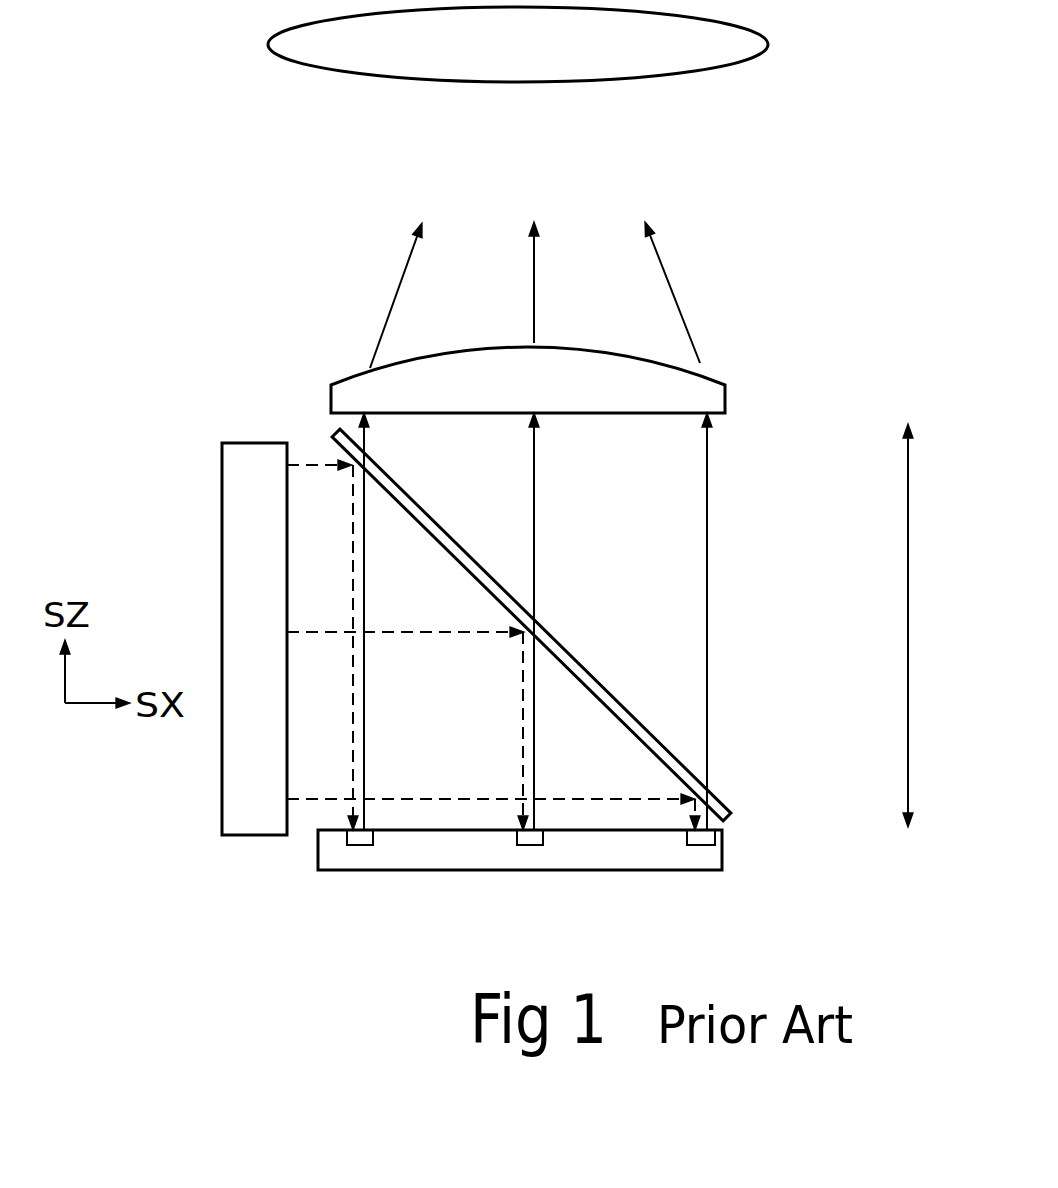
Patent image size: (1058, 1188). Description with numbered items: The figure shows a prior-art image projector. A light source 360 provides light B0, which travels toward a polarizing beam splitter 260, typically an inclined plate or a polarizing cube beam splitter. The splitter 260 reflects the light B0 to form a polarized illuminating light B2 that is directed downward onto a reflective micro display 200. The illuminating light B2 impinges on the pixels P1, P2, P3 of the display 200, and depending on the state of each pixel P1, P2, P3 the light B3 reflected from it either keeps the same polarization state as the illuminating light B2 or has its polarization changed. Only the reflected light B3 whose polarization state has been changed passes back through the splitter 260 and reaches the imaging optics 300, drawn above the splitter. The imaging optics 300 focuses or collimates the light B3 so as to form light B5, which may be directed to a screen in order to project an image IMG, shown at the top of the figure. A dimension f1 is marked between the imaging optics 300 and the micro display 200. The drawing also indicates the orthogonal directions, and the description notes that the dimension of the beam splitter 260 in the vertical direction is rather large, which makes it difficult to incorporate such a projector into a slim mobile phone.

The image IMG is at (768, 44).
The light B5 is at (534, 273).
The imaging optics 300 is at (725, 400).
The polarizing beam splitter 260 is at (337, 431).
The light source 360 is at (250, 835).
The light B0 is at (299, 630).
The polarized illuminating light B2 is at (523, 748).
The reflected light B3 is at (538, 760).
The reflective micro display 200 is at (722, 850).
The pixel P1 is at (358, 845).
The pixel P2 is at (525, 845).
The pixel P3 is at (695, 845).
The focal length f1 is at (892, 625).